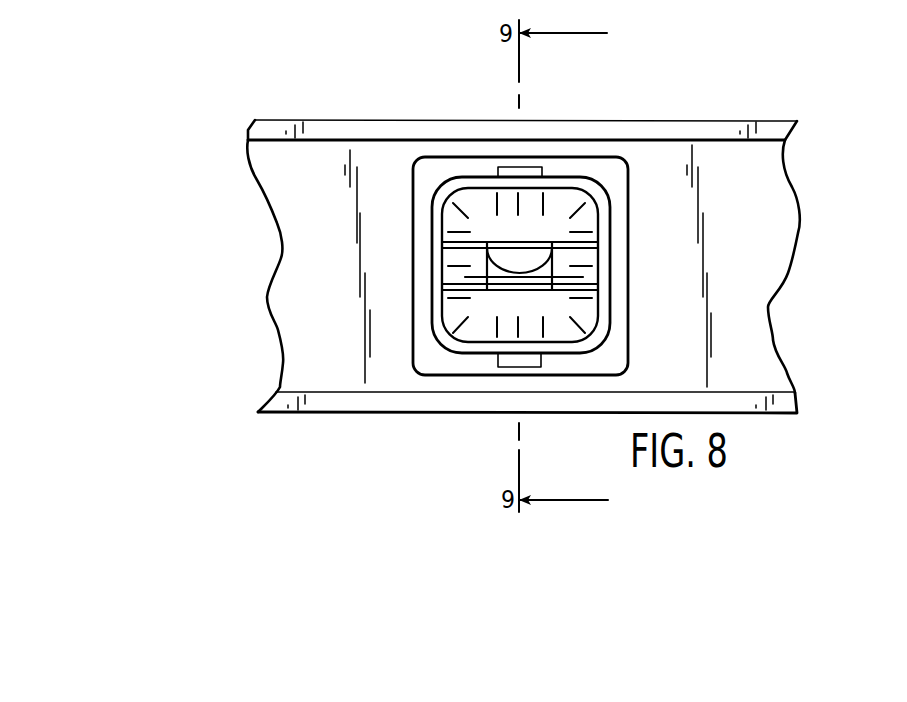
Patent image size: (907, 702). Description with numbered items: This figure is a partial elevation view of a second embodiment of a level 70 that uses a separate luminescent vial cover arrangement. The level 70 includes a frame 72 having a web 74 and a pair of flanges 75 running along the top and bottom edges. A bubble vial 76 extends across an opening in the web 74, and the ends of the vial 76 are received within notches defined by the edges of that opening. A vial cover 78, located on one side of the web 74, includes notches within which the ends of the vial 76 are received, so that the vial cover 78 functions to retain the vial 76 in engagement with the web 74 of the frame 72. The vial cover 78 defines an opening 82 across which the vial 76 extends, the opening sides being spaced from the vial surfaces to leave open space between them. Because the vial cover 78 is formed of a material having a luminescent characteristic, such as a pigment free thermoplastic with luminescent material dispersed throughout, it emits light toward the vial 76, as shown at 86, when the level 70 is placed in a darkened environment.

The level 70 is at (822, 157).
The frame 72 is at (248, 130).
The web 74 is at (280, 188).
The flanges 75 is at (275, 128).
The bubble vial 76 is at (483, 287).
The vial cover 78 is at (627, 160).
The opening 82 is at (597, 223).
The emitted light 86 is at (495, 207).